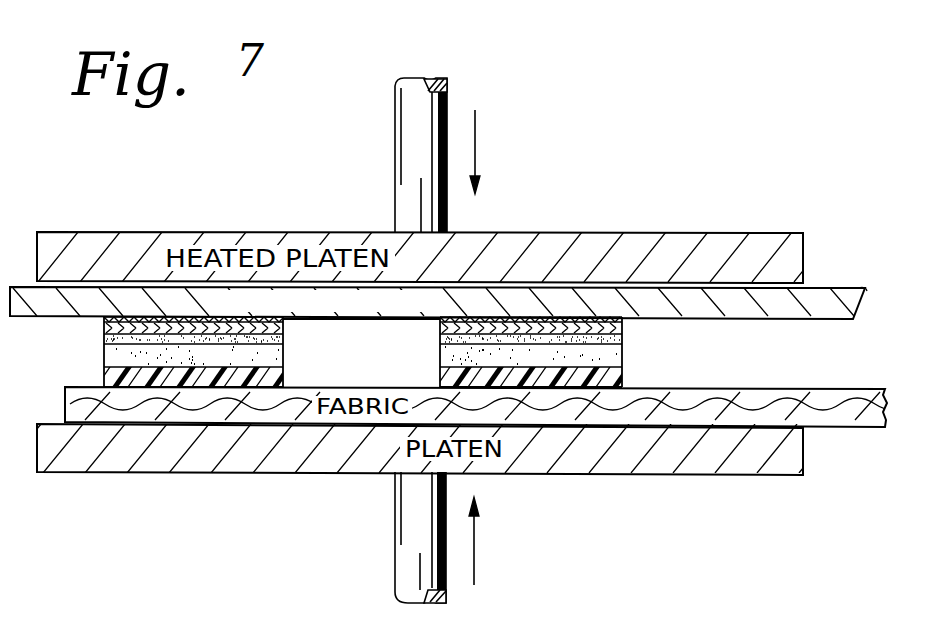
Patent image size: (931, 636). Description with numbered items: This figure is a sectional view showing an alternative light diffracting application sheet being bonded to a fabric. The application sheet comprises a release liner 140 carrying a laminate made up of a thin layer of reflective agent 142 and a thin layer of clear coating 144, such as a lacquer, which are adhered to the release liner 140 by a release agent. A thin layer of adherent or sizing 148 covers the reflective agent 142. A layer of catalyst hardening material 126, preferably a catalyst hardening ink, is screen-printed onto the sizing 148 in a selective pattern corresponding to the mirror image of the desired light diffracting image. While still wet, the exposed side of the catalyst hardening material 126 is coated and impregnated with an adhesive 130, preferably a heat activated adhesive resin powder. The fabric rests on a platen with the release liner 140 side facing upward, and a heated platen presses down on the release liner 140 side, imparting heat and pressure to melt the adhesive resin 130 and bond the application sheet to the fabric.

The catalyst hardening material 126 is at (283, 362).
The adhesive 130 is at (104, 372).
The release liner 140 is at (812, 319).
The reflective agent 142 is at (440, 332).
The clear coating 144 is at (104, 320).
The adherent or sizing 148 is at (440, 342).